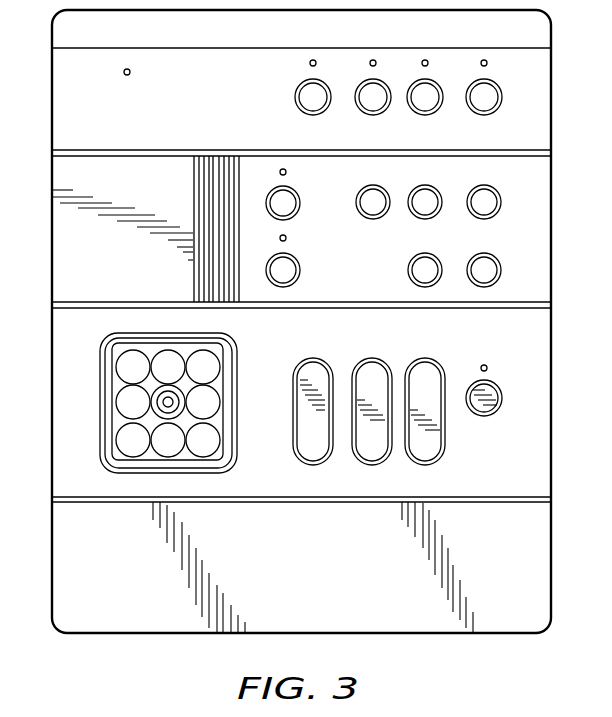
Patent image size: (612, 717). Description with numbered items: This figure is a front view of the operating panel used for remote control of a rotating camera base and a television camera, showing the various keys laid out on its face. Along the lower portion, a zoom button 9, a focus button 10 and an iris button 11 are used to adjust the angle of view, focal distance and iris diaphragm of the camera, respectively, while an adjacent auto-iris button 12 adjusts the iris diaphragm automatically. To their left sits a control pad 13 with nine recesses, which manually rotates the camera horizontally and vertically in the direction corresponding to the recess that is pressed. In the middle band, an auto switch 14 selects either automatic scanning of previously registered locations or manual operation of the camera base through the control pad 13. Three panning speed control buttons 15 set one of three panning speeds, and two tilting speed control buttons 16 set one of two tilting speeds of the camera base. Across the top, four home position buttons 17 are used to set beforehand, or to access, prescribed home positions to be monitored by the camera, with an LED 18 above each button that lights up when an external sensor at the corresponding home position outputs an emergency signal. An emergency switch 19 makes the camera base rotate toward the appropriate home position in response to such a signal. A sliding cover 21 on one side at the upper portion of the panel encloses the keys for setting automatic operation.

The zoom button 9 is at (300, 435).
The focus button 10 is at (362, 448).
The iris button 11 is at (432, 444).
The auto-iris button 12 is at (487, 408).
The control pad 13 is at (117, 378).
The auto switch 14 is at (280, 197).
The panning speed control buttons 15 is at (480, 204).
The tilting speed control buttons 16 is at (432, 280).
The home position buttons 17 is at (357, 100).
The LED 18 is at (316, 60).
The emergency switch 19 is at (280, 265).
The sliding cover 21 is at (62, 235).